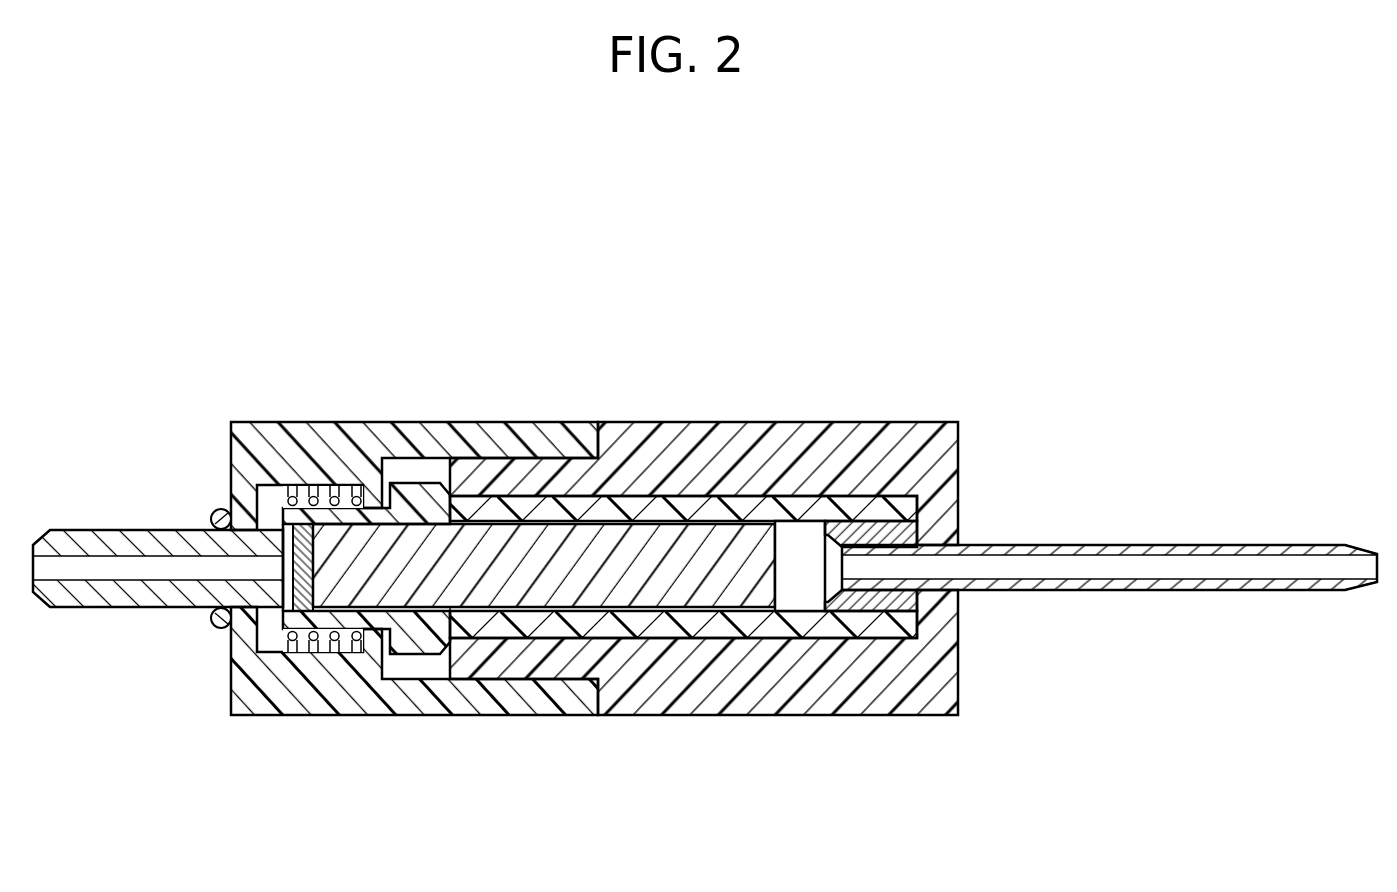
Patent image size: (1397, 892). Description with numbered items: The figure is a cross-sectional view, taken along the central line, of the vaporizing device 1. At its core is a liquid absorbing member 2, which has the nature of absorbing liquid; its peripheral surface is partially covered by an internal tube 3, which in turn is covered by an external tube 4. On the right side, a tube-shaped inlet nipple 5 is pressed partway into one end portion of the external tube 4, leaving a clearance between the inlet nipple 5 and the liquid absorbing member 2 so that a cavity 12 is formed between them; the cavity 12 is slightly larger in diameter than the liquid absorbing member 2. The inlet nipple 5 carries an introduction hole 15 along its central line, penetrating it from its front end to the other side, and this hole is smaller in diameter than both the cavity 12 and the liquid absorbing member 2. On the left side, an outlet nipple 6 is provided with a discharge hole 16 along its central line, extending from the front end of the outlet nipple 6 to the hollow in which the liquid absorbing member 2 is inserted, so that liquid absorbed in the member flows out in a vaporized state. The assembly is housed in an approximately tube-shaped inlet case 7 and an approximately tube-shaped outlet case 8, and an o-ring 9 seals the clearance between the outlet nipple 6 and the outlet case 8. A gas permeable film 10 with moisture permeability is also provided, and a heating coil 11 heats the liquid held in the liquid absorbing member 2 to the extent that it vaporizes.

The vaporizing device 1 is at (1035, 220).
The liquid absorbing member 2 is at (560, 553).
The internal tube 3 is at (710, 527).
The external tube 4 is at (808, 512).
The inlet nipple 5 is at (898, 533).
The outlet nipple 6 is at (268, 502).
The inlet case 7 is at (863, 693).
The outlet case 8 is at (372, 705).
The o-ring 9 is at (210, 513).
The gas permeable film 10 is at (304, 540).
The heating coil 11 is at (313, 645).
The cavity 12 is at (795, 592).
The introduction hole 15 is at (1130, 570).
The discharge hole 16 is at (137, 568).